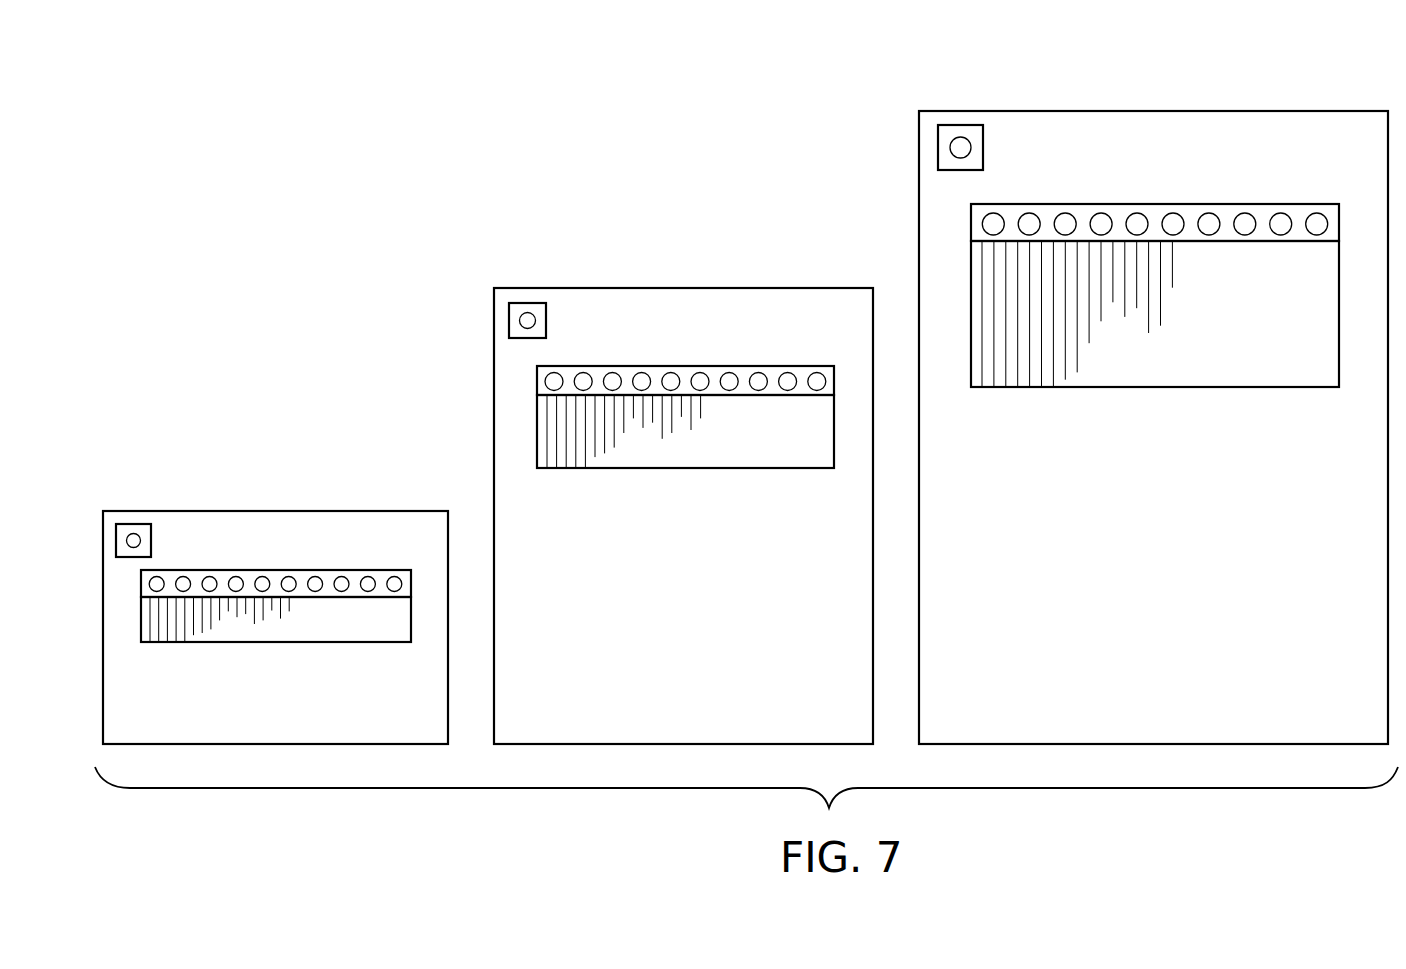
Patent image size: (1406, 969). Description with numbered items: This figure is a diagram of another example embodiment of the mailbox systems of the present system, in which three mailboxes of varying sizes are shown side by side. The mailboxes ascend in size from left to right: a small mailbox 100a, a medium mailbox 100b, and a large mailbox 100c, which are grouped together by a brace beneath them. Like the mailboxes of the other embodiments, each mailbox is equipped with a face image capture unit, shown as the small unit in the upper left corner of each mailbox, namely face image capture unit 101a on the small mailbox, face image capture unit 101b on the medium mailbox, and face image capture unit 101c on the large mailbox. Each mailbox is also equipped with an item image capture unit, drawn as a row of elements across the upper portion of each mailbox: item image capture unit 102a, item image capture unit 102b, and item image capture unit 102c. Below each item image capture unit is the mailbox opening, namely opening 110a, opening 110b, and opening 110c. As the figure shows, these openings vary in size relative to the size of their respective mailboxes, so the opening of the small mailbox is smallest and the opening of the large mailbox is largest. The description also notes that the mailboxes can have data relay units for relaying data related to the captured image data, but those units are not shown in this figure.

The mailbox 100a is at (325, 510).
The mailbox 100b is at (665, 288).
The mailbox 100c is at (1213, 110).
The face image capture unit 101a is at (140, 523).
The face image capture unit 101b is at (530, 302).
The face image capture unit 101c is at (962, 123).
The item image capture unit 102a is at (255, 569).
The item image capture unit 102b is at (683, 372).
The item image capture unit 102c is at (1092, 203).
The opening 110a is at (227, 643).
The opening 110b is at (655, 468).
The opening 110c is at (1060, 387).